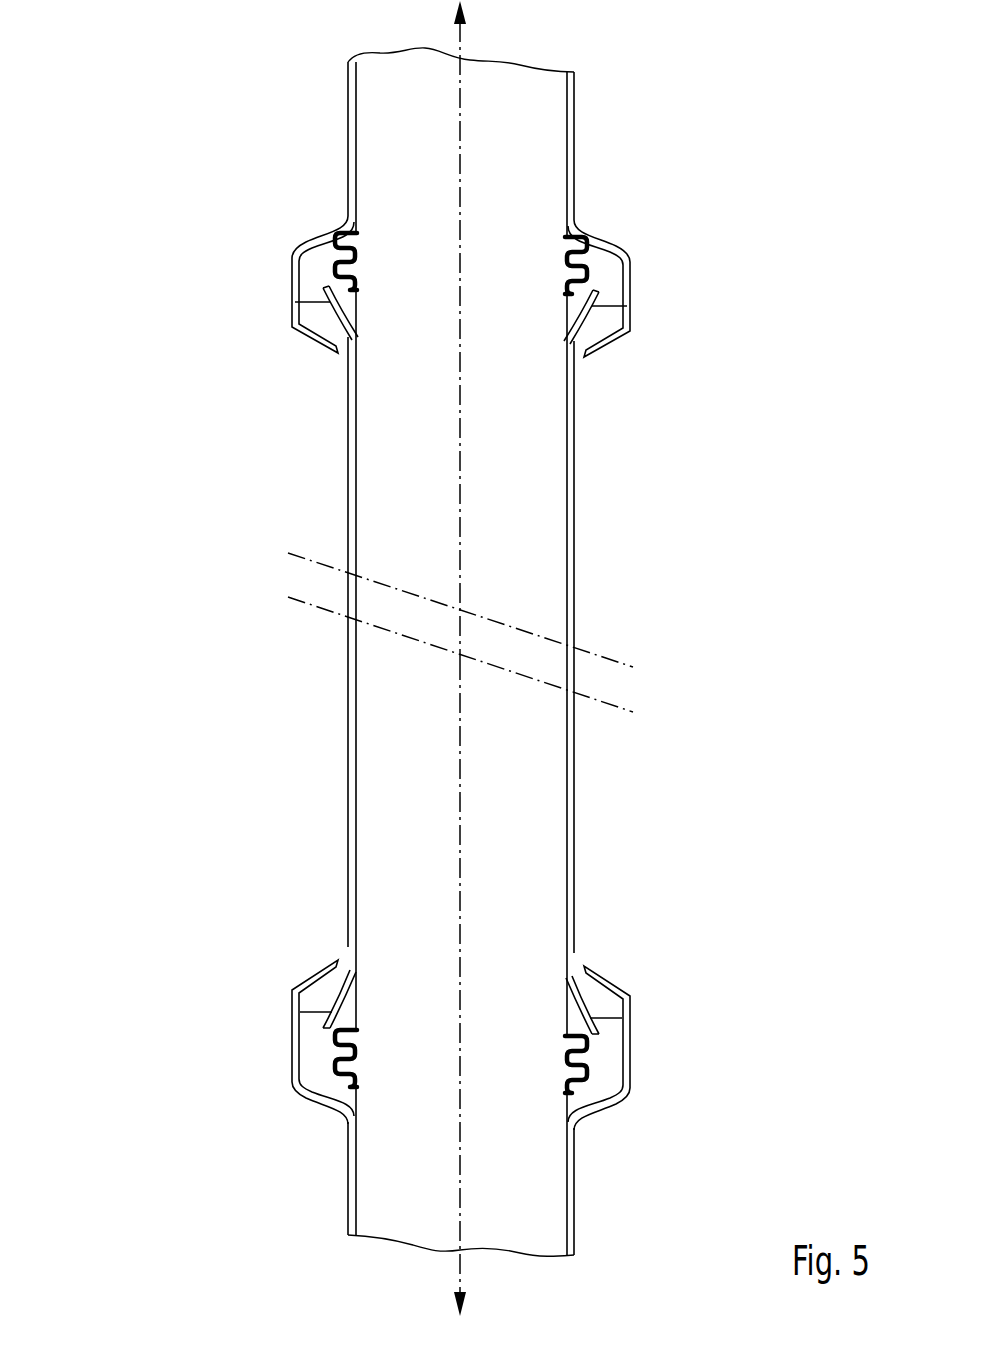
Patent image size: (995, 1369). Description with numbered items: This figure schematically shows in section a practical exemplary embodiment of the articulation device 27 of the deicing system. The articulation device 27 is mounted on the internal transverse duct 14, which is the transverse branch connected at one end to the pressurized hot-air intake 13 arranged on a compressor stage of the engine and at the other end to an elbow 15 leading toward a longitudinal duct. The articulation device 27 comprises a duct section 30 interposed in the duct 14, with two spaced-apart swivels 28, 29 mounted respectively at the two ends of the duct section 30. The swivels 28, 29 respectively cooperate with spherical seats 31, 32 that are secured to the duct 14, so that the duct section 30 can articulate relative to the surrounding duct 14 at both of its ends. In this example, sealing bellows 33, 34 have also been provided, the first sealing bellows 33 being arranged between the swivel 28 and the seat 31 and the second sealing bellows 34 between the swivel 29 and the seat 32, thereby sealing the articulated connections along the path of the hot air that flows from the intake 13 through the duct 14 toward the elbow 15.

The pressurized hot-air intake 13 is at (476, 330).
The internal transverse duct 14 is at (537, 115).
The elbow 15 is at (479, 988).
The articulation device 27 is at (188, 510).
The swivel 28 is at (335, 322).
The swivel 29 is at (336, 1012).
The duct section 30 is at (575, 580).
The spherical seat 31 is at (317, 315).
The spherical seat 32 is at (347, 1000).
The sealing bellows 33 is at (357, 248).
The sealing bellows 34 is at (565, 1072).